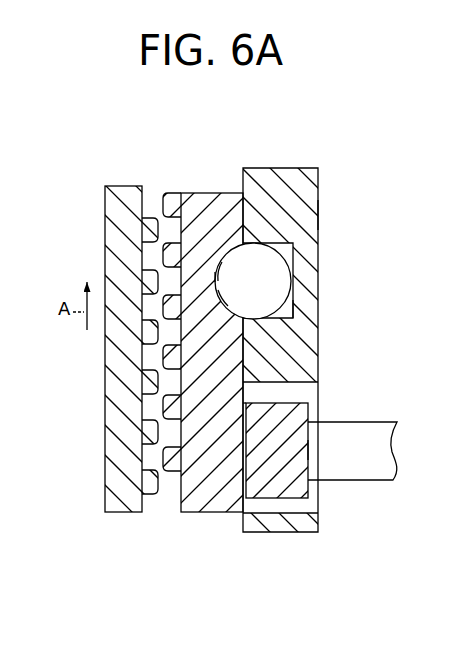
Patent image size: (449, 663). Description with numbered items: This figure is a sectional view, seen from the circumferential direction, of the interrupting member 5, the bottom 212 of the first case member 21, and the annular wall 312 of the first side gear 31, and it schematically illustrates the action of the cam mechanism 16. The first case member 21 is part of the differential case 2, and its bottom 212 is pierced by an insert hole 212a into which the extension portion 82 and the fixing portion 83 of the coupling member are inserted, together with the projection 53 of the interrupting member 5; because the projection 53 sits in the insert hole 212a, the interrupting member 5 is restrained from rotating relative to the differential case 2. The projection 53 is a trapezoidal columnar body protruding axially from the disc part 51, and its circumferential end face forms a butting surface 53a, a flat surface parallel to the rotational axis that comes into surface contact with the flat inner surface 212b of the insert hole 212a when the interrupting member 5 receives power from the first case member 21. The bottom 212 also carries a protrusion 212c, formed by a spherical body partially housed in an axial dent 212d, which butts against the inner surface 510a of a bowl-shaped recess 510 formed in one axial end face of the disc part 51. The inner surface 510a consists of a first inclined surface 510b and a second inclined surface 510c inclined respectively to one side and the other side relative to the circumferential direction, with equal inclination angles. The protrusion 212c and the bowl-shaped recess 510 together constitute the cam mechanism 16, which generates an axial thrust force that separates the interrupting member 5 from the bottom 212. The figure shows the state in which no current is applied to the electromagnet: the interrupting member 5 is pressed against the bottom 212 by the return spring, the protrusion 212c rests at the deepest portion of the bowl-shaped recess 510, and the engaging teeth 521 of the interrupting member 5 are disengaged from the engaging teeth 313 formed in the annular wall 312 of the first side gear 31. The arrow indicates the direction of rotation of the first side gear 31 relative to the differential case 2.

The differential case 2 is at (224, 331).
The first case member 21 is at (224, 331).
The bottom 212 is at (224, 331).
The insert hole 212a is at (322, 514).
The inner surface of insert hole 212b is at (292, 384).
The protrusion 212c is at (222, 274).
The axial dent 212d is at (295, 312).
The cam mechanism 16 is at (321, 212).
The first side gear 31 is at (224, 331).
The annular wall 312 is at (112, 413).
The engaging teeth of first side gear 313 is at (150, 480).
The interrupting member 5 is at (224, 331).
The disc part 51 is at (224, 331).
The engaging teeth of interrupting member 521 is at (166, 417).
The projection 53 is at (224, 331).
The butting surface 53a is at (296, 402).
The bowl-shaped recess 510 is at (329, 234).
The inner surface of bowl-shaped recess 510a is at (330, 262).
The first inclined surface 510b is at (224, 304).
The second inclined surface 510c is at (224, 265).
The extension portion 82 is at (367, 457).
The fixing portion 83 is at (310, 447).